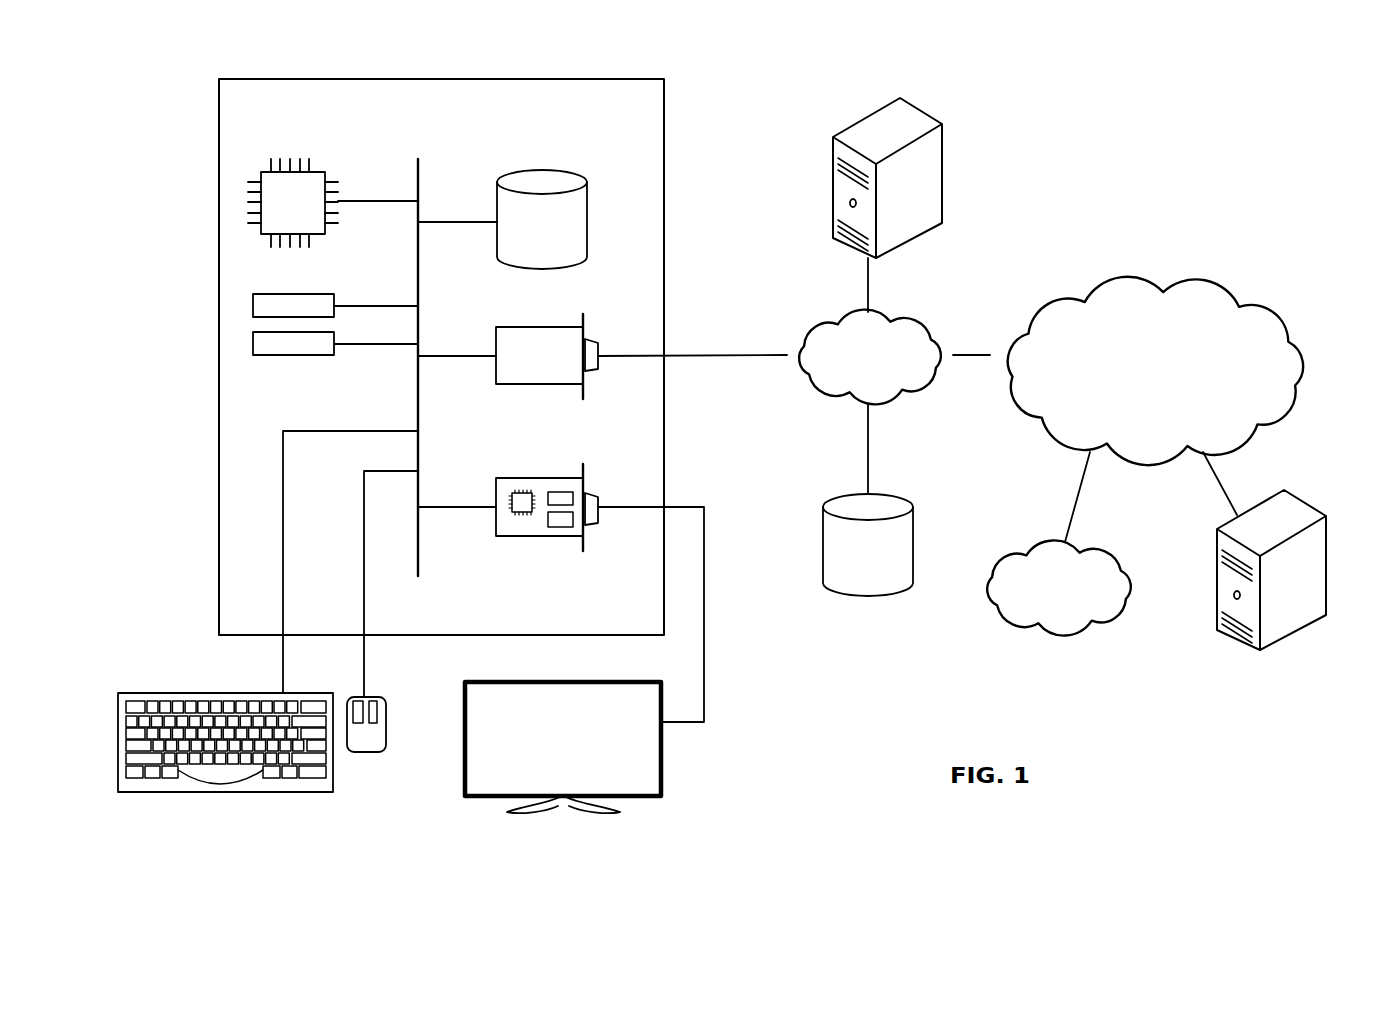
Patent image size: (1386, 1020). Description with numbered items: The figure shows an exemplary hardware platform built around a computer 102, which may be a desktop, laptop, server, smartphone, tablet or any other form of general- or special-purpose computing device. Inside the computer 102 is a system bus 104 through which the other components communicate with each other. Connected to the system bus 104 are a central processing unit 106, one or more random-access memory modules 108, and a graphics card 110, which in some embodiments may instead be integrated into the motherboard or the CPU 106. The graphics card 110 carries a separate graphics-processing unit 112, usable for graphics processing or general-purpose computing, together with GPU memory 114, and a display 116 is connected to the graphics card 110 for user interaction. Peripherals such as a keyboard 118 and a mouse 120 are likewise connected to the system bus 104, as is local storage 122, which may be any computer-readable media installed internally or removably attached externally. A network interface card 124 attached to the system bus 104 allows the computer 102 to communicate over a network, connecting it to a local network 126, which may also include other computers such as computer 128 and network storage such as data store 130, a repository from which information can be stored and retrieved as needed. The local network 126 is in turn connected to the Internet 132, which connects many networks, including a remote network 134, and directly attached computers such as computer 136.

The computer 102 is at (615, 78).
The system bus 104 is at (420, 171).
The central processing unit (CPU) 106 is at (317, 170).
The random-access memory (RAM) modules 108 is at (335, 337).
The graphics card 110 is at (496, 490).
The graphics-processing unit (GPU) 112 is at (520, 512).
The GPU memory 114 is at (558, 527).
The display 116 is at (663, 779).
The keyboard 118 is at (228, 793).
The mouse 120 is at (364, 753).
The local storage 122 is at (588, 205).
The network interface card (NIC) 124 is at (496, 338).
The local network 126 is at (925, 312).
The computer 128 is at (925, 110).
The data store 130 is at (905, 498).
The Internet 132 is at (1200, 272).
The remote network 134 is at (1118, 546).
The computer 136 is at (1300, 500).